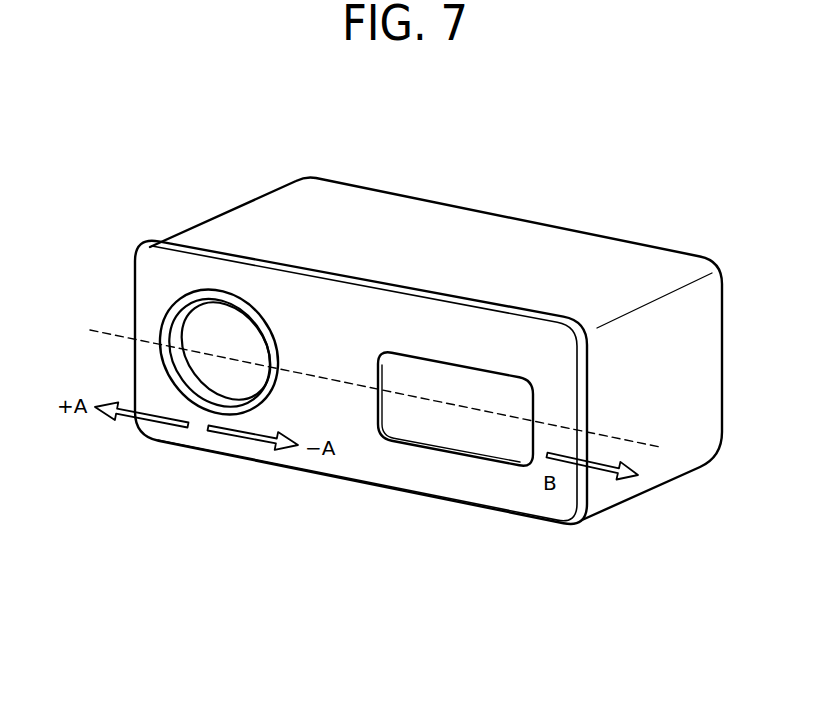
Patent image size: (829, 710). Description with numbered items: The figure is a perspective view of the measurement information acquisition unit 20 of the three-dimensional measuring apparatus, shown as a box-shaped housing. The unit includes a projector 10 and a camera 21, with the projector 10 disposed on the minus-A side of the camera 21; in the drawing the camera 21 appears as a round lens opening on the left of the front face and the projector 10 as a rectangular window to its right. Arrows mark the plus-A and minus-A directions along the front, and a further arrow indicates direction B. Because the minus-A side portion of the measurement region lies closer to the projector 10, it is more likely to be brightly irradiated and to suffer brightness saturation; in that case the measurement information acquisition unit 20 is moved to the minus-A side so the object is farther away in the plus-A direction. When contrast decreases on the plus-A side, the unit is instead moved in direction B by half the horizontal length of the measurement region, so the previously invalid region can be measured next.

The projector 10 is at (470, 362).
The measurement information acquisition unit 20 is at (264, 209).
The camera 21 is at (212, 295).